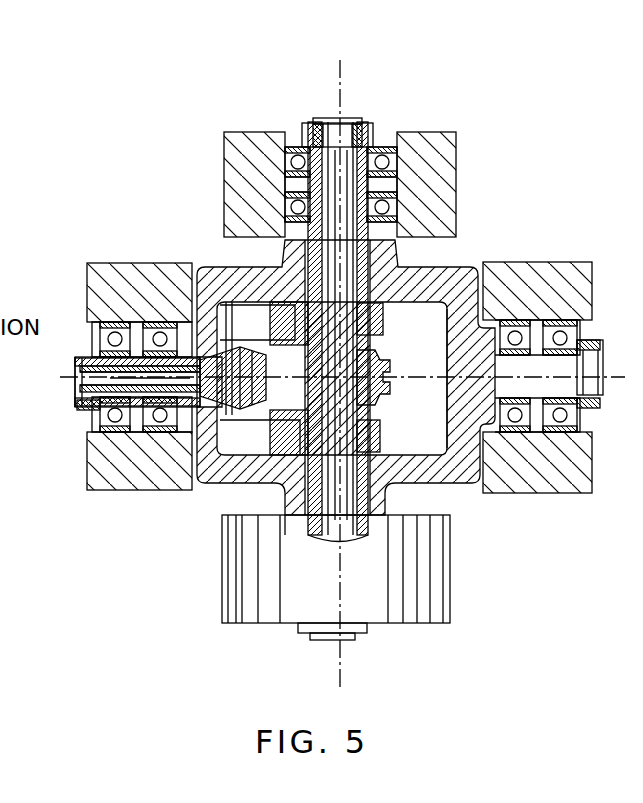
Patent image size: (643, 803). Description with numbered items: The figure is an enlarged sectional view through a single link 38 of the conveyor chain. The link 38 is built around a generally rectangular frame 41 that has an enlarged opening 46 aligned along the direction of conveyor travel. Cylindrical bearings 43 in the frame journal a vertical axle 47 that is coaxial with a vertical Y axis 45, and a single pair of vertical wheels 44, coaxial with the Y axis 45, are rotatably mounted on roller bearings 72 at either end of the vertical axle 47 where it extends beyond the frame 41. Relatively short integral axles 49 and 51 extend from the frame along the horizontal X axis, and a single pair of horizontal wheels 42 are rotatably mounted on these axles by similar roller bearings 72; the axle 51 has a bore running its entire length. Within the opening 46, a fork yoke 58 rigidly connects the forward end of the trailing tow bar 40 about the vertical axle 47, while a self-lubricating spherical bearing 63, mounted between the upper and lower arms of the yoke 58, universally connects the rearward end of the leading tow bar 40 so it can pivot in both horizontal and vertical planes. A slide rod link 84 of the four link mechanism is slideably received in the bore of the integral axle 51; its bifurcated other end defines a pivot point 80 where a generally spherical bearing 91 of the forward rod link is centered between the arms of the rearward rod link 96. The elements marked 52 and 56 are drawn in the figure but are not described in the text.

The link 38 is at (185, 240).
The tow bar 40 is at (4, 430).
The frame 41 is at (238, 484).
The horizontal wheels 42 is at (568, 494).
The cylindrical bearings 43 is at (63, 380).
The vertical wheels 44 is at (440, 130).
The Y axis 45 is at (345, 120).
The opening 46 is at (441, 444).
The vertical axle 47 is at (333, 121).
The integral axle 49 is at (558, 335).
The integral axle 51 is at (75, 364).
The support 52 is at (6, 520).
The gear 56 is at (366, 372).
The fork yoke 58 is at (383, 325).
The spherical bearing 63 is at (292, 382).
The roller bearings 72 is at (376, 138).
The pivot point 80 is at (127, 268).
The slide rod link 84 is at (103, 418).
The spherical bearing 91 is at (262, 345).
The rearward rod link 96 is at (256, 411).